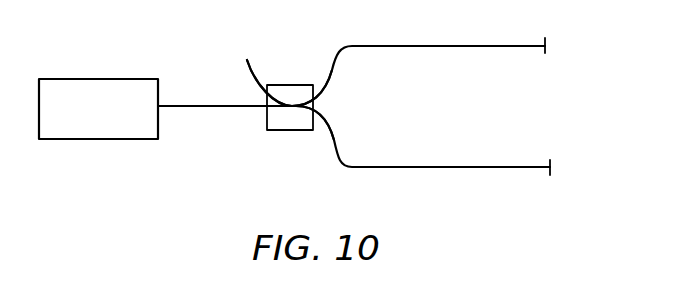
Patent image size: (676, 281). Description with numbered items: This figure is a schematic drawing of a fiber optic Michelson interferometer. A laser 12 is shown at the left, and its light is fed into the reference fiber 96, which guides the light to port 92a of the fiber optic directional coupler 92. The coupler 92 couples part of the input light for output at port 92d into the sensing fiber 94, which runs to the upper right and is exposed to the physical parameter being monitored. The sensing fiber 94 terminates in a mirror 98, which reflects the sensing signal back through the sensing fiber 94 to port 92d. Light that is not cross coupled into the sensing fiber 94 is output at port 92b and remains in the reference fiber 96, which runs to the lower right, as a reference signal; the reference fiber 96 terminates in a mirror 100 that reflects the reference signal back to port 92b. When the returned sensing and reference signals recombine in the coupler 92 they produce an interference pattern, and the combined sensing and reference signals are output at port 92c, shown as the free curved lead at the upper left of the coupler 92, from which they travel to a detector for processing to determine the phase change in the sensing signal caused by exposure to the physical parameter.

The laser 12 is at (66, 79).
The fiber optic directional coupler 92 is at (278, 58).
The port 92A of the coupler 92a is at (259, 119).
The port 92B of the coupler 92b is at (340, 118).
The port 92C of the coupler 92c is at (239, 84).
The port 92D of the coupler 92d is at (341, 91).
The sensing fiber 94 is at (462, 46).
The reference fiber 96 is at (213, 108).
The mirror 98 is at (550, 165).
The mirror 100 is at (545, 44).